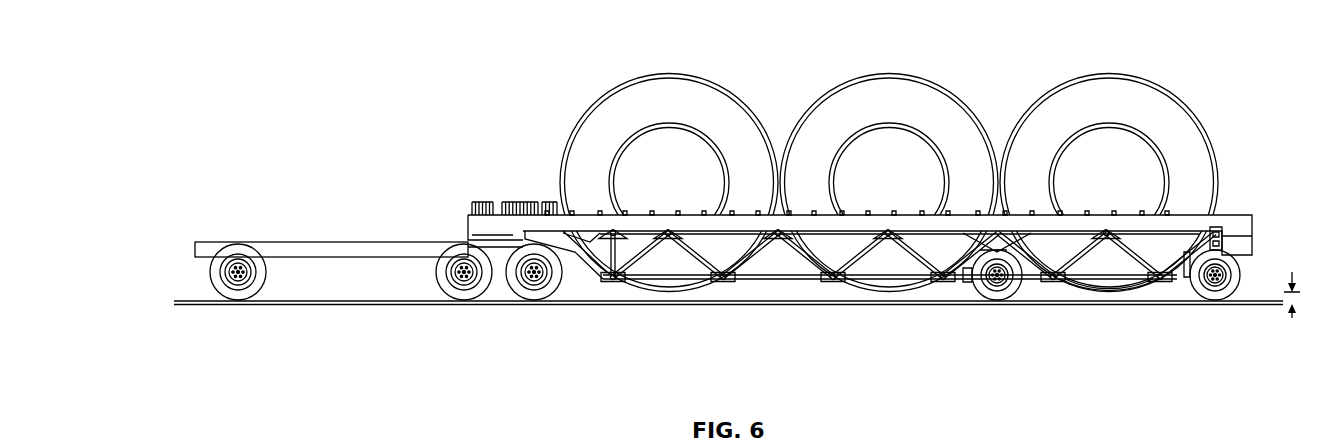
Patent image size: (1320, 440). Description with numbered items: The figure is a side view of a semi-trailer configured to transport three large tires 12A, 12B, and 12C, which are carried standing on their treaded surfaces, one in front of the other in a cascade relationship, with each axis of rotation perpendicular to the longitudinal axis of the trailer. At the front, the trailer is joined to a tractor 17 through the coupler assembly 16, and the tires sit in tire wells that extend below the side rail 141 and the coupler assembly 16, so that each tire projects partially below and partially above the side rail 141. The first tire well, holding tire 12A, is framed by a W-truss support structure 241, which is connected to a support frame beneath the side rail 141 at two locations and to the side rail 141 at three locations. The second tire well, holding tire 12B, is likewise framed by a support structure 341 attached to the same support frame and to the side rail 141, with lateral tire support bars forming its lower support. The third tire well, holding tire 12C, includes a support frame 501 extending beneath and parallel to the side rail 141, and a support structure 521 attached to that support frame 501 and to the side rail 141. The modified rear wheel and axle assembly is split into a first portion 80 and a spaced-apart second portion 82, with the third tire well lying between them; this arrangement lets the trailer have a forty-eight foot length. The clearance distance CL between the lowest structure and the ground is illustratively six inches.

The tire 12A is at (582, 142).
The tire 12B is at (893, 100).
The tire 12C is at (1118, 100).
The coupler assembly 16 is at (457, 221).
The tractor frame 17 is at (313, 232).
The side rail 141 is at (1235, 222).
The support structure 521 is at (939, 273).
The support structure 241 is at (640, 258).
The support structure 341 is at (801, 262).
The support frame 501 is at (1118, 282).
The first portion of the axle assembly 80 is at (990, 305).
The second portion of the axle assembly 82 is at (1210, 305).
The clearance distance CL is at (1292, 306).